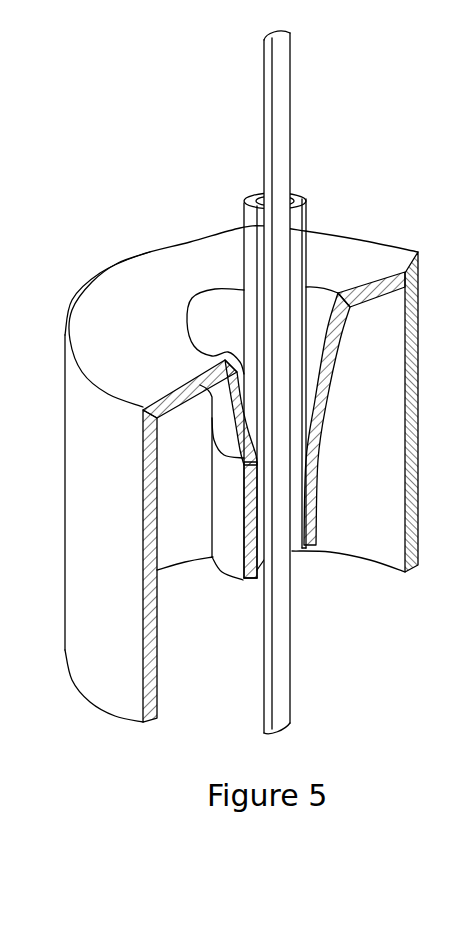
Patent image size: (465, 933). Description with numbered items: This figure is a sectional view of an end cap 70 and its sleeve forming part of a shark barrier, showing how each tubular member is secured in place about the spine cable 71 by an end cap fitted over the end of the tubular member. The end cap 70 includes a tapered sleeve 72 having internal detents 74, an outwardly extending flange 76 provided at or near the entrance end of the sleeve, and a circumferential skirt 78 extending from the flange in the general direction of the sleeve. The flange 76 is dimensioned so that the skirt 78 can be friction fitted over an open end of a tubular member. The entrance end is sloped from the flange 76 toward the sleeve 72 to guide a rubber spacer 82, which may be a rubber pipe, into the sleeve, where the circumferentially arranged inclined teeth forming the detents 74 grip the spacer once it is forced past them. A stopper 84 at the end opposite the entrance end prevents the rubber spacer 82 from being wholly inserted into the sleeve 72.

The end cap 70 is at (110, 220).
The spine cable 71 is at (286, 102).
The tapered sleeve 72 is at (231, 343).
The internal detents 74 is at (318, 456).
The outwardly extending flange 76 is at (158, 349).
The circumferential skirt 78 is at (122, 533).
The rubber spacer 82 is at (240, 223).
The stopper 84 is at (258, 574).